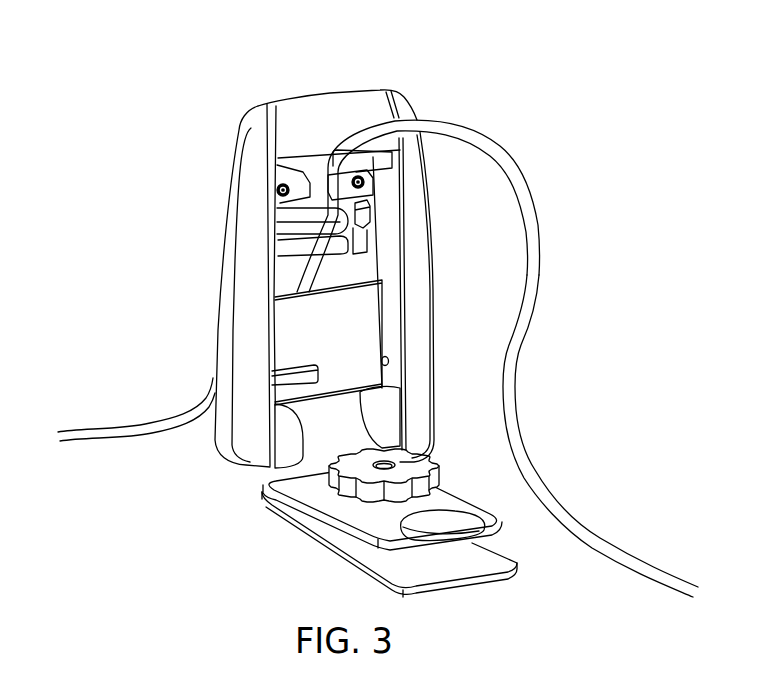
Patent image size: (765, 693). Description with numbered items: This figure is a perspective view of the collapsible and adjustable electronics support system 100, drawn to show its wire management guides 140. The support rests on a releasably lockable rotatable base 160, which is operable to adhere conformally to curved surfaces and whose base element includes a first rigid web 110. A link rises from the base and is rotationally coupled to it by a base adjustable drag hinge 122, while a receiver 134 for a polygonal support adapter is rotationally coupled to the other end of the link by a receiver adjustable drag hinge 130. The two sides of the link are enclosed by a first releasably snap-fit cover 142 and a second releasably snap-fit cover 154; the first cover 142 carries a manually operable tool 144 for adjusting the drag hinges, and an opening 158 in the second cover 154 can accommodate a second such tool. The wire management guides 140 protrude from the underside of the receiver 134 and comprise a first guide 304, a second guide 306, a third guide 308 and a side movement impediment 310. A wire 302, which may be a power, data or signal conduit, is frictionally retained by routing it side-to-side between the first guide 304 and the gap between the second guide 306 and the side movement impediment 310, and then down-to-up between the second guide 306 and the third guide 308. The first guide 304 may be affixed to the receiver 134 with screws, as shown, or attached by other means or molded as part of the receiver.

The collapsible and adjustable electronics support system 100 is at (300, 60).
The first rigid web 110 is at (504, 560).
The base adjustable drag hinge 122 is at (256, 477).
The receiver adjustable drag hinge 130 is at (432, 102).
The receiver 134 is at (374, 268).
The wire management guides 140 is at (382, 193).
The first releasably snap-fit cover 142 is at (238, 460).
The tool 144 is at (290, 368).
The second releasably snap-fit cover 154 is at (432, 410).
The opening 158 is at (381, 363).
The releasably lockable rotatable base 160 is at (290, 558).
The wire 302 is at (571, 520).
The first guide 304 is at (380, 162).
The second guide 306 is at (297, 220).
The third guide 308 is at (292, 248).
The side movement impediment 310 is at (372, 221).